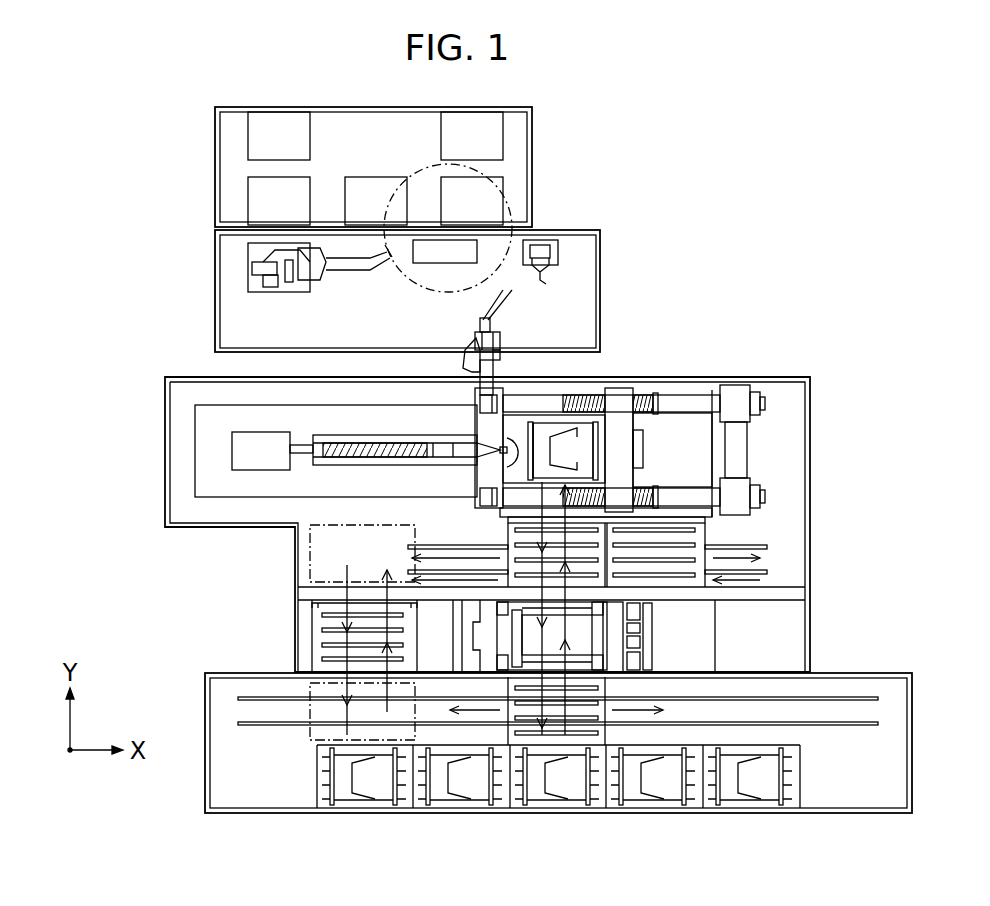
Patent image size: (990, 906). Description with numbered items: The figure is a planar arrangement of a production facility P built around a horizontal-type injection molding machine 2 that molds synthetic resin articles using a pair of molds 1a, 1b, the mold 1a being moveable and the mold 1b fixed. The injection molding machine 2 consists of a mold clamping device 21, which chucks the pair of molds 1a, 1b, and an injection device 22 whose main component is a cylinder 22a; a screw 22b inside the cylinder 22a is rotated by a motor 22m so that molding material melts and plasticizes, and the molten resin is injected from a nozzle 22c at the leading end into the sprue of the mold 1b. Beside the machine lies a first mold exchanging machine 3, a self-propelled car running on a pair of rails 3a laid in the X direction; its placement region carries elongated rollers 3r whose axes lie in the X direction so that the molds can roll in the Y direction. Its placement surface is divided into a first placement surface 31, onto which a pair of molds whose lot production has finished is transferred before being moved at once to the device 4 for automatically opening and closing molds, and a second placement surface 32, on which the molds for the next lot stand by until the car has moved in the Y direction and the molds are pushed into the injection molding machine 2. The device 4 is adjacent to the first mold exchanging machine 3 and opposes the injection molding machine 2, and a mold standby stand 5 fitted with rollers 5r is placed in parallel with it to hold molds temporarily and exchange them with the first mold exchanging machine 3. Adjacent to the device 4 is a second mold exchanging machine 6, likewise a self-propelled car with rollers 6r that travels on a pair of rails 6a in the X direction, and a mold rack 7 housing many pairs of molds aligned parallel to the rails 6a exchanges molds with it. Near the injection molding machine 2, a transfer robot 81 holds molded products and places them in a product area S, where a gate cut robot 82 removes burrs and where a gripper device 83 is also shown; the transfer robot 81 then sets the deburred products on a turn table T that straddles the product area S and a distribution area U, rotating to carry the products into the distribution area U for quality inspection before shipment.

The production facility P is at (703, 137).
The distribution area U is at (205, 133).
The product area S is at (205, 288).
The turn table T is at (527, 236).
The gripper device 83 is at (250, 265).
The gate cut robot 82 is at (546, 247).
The transfer robot 81 is at (500, 310).
The injection molding machine 2 is at (702, 354).
The injection device 22 is at (200, 510).
The motor 22m is at (232, 432).
The cylinder 22a is at (323, 433).
The screw 22b is at (330, 455).
The nozzle 22c is at (505, 448).
The mold 1a is at (585, 437).
The mold 1b is at (543, 437).
The mold clamping device 21 is at (761, 440).
The first placement surface 31 is at (498, 527).
The second placement surface 32 is at (665, 525).
The first mold exchanging machine 3 is at (717, 530).
The rails 3a is at (767, 572).
The rollers 3r is at (686, 577).
The device for automatically opening and closing molds 4 is at (664, 628).
The mold standby stand 5 is at (301, 645).
The rollers 5r is at (322, 615).
The second mold exchanging machine 6 is at (620, 734).
The rollers 6r is at (605, 688).
The rails 6a is at (878, 722).
The mold rack 7 is at (304, 796).